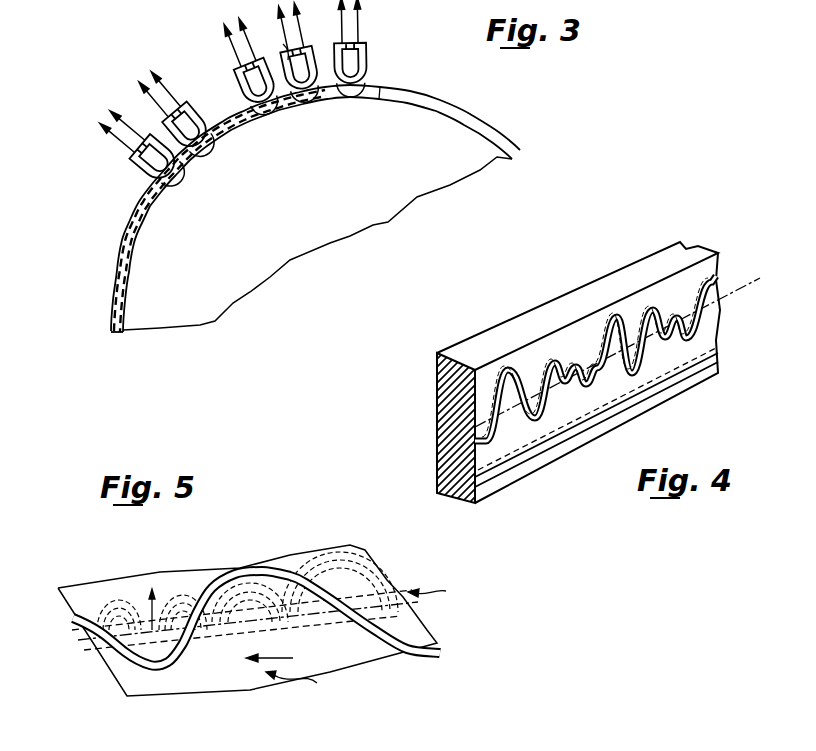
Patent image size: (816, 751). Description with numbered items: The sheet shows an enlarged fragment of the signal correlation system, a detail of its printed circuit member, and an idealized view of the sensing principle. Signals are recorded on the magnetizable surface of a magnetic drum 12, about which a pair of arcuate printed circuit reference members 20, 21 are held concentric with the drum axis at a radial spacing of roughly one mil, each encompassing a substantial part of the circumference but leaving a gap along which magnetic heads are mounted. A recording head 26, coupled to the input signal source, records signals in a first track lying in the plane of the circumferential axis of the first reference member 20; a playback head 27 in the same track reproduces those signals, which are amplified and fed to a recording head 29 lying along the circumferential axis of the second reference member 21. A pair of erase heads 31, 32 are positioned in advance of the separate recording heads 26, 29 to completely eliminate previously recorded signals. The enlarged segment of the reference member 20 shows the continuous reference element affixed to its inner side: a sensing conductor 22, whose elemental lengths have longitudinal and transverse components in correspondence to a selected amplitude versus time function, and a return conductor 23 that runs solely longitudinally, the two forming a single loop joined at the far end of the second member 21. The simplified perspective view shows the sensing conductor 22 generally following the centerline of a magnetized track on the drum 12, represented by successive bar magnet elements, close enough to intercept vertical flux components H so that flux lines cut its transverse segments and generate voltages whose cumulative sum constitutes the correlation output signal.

In FIG. 5, the magnetic drum 12 is at (113, 683).
In FIG. 3, the printed circuit reference member 20 is at (416, 92).
In FIG. 4, the printed circuit reference member 20 is at (693, 242).
In FIG. 3, the printed circuit reference member 21 is at (331, 80).
In FIG. 4, the sensing conductor 22 is at (697, 307).
In FIG. 5, the sensing conductor 22 is at (258, 568).
In FIG. 4, the return conductor 23 is at (720, 350).
In FIG. 3, the recording head 26 is at (235, 68).
In FIG. 3, the playback head 27 is at (367, 54).
In FIG. 3, the recording head 29 is at (132, 167).
In FIG. 3, the erase head 31 is at (283, 44).
In FIG. 3, the erase head 32 is at (192, 105).